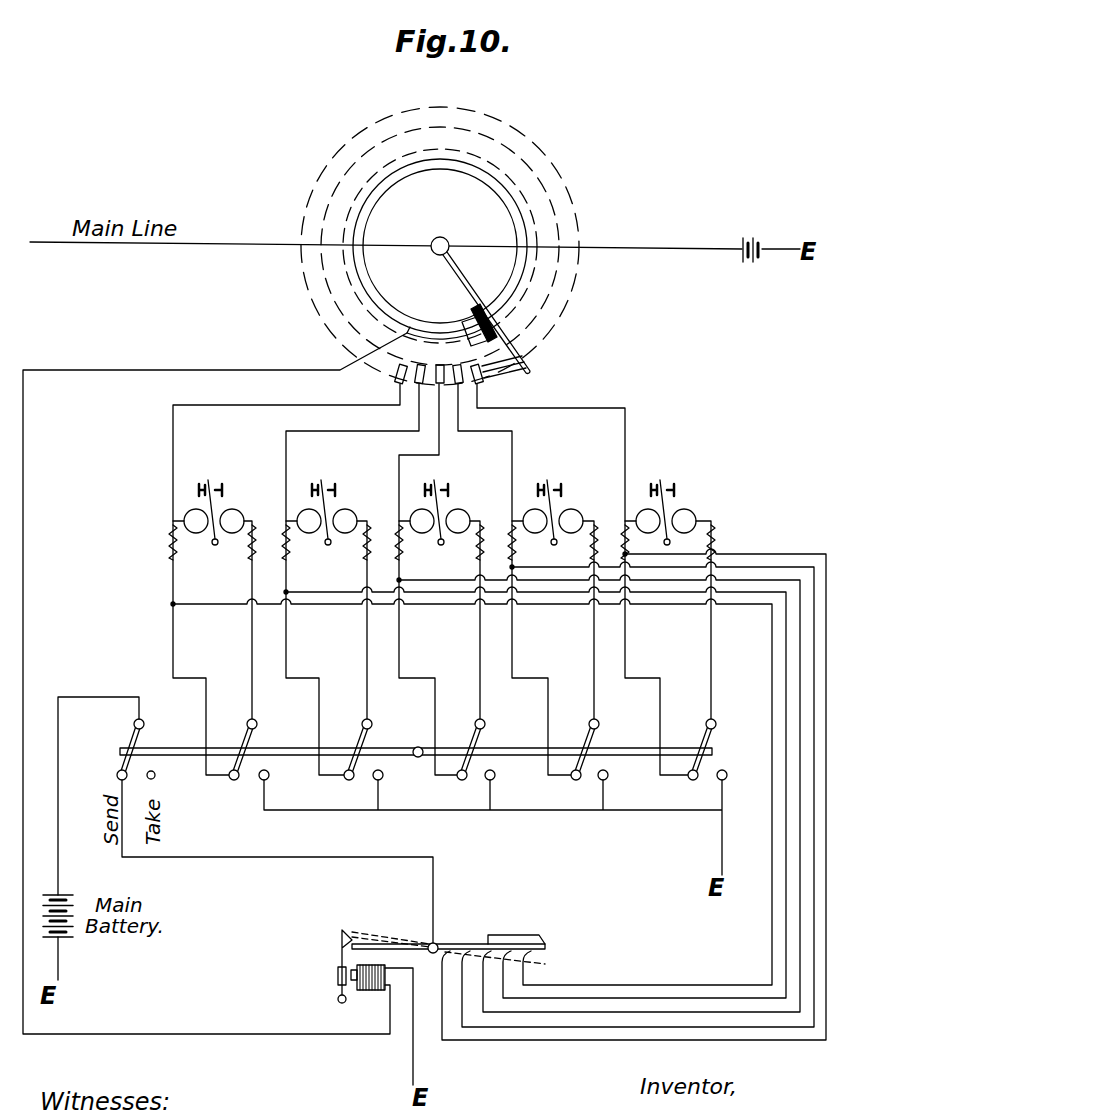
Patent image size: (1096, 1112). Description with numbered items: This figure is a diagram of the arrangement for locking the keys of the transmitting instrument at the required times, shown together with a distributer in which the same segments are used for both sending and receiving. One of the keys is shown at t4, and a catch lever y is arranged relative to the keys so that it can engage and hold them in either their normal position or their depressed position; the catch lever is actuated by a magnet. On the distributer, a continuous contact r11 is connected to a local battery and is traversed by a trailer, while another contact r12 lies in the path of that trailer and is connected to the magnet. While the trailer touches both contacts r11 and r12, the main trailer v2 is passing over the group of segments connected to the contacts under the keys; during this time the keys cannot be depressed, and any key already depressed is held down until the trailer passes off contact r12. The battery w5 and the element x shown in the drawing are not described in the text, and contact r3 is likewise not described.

The continuous contact r11 is at (370, 285).
The contact r12 is at (253, 680).
The contact block r3 is at (474, 322).
The main trailer v2 is at (492, 376).
The main line battery w5 is at (756, 234).
The key t4 is at (510, 939).
The catch lever y is at (335, 966).
The electromagnet x is at (382, 1025).